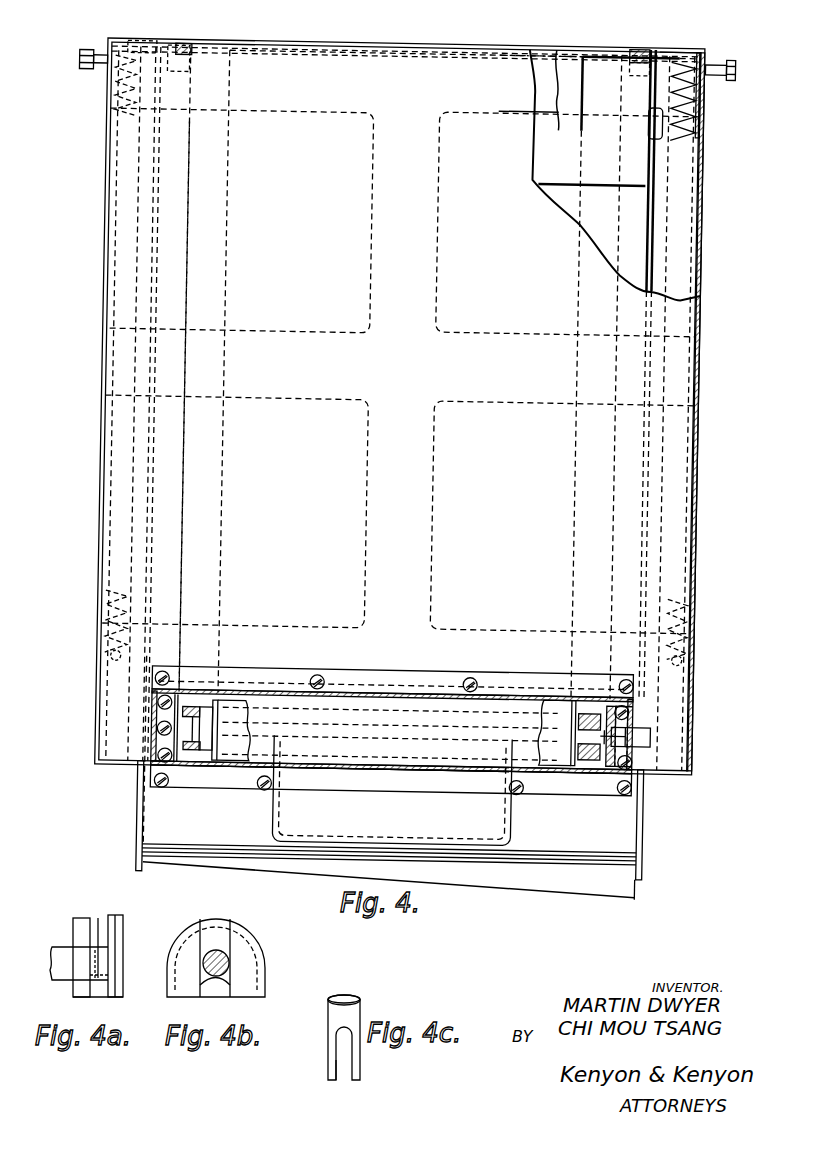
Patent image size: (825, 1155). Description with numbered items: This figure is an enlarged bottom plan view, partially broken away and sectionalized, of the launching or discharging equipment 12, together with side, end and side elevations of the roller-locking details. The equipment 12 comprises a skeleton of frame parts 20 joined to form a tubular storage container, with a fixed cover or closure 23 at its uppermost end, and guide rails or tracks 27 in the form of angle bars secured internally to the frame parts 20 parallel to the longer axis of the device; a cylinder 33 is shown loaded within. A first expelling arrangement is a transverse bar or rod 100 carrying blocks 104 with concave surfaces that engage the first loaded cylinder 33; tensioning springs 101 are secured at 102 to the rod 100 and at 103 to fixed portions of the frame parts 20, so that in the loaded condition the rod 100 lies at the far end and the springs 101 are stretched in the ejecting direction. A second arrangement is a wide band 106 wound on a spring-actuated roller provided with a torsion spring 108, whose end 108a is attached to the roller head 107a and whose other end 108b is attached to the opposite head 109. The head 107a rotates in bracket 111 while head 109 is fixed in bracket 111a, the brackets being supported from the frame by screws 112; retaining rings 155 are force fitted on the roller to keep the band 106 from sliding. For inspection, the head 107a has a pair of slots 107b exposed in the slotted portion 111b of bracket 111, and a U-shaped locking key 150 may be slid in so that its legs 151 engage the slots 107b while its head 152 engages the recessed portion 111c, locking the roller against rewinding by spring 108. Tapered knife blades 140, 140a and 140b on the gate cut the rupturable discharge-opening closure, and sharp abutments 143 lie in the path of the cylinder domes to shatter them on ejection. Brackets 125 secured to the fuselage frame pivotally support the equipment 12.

In FIG. 4, the launching or discharging equipment 12 is at (670, 689).
In FIG. 4, the frame parts 20 is at (288, 327).
In FIG. 4, the fixed cover or closure 23 is at (666, 40).
In FIG. 4, the guide rails or tracks 27 is at (192, 165).
In FIG. 4, the cylinders 33 is at (594, 70).
In FIG. 4, the bar or rod 100 is at (150, 40).
In FIG. 4, the tensioning springs 101 is at (107, 105).
In FIG. 4, the spring attachment point on rod 102 is at (701, 40).
In FIG. 4, the spring attachment point on frame 103 is at (123, 648).
In FIG. 4, the blocks 104 is at (188, 42).
In FIG. 4, the band 106 is at (237, 549).
In FIG. 4, the roller head 107a is at (610, 720).
In FIG. 4B, the roller head 107a is at (226, 956).
In FIG. 4, the slots in roller head 107b is at (627, 725).
In FIG. 4A, the slots in roller head 107b is at (95, 950).
In FIG. 4B, the slots in roller head 107b is at (230, 985).
In FIG. 4, the torsion spring 108 is at (226, 763).
In FIG. 4, the spring end 108a is at (626, 692).
In FIG. 4, the spring end 108b is at (229, 758).
In FIG. 4, the roller head 109 is at (200, 712).
In FIG. 4, the bracket 111 is at (660, 747).
In FIG. 4A, the bracket 111 is at (110, 987).
In FIG. 4B, the bracket 111 is at (258, 974).
In FIG. 4, the bracket 111a is at (170, 750).
In FIG. 4, the slotted portion of bracket 111b is at (653, 762).
In FIG. 4A, the slotted portion of bracket 111b is at (100, 925).
In FIG. 4, the recessed portion of bracket 111c is at (624, 761).
In FIG. 4B, the recessed portion of bracket 111c is at (212, 920).
In FIG. 4, the screws 112 is at (174, 764).
In FIG. 4, the brackets 125 is at (106, 48).
In FIG. 4, the knife blade or cutting member 140 is at (603, 873).
In FIG. 4, the knife blade or cutting member 140a is at (660, 840).
In FIG. 4, the knife blade or cutting member 140b is at (166, 845).
In FIG. 4, the glass breaker or sharp abutment 143 is at (115, 747).
In FIG. 4C, the U-shaped locking key 150 is at (352, 1012).
In FIG. 4C, the legs of locking key 151 is at (331, 1070).
In FIG. 4C, the head of locking key 152 is at (344, 995).
In FIG. 4, the retaining rings 155 is at (233, 703).